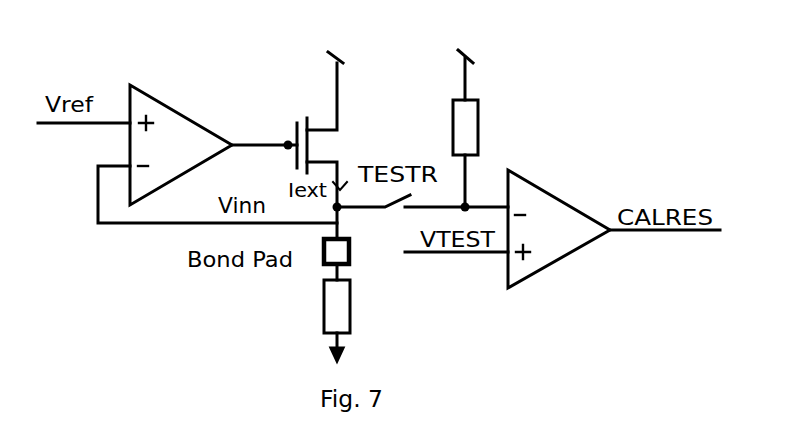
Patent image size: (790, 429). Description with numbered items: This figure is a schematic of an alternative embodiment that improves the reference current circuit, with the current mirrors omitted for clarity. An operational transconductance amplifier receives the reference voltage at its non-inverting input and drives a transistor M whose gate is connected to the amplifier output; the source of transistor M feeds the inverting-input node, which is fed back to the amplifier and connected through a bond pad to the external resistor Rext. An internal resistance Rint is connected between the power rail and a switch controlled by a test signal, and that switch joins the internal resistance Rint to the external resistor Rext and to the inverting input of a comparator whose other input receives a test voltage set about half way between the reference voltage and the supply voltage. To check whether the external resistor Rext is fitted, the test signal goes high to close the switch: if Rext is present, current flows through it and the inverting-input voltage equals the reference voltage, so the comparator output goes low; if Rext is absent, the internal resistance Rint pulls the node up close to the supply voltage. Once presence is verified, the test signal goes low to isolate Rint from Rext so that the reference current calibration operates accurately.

The transistor M is at (310, 145).
The external resistor Rext is at (366, 312).
The internal resistance Rint is at (491, 131).